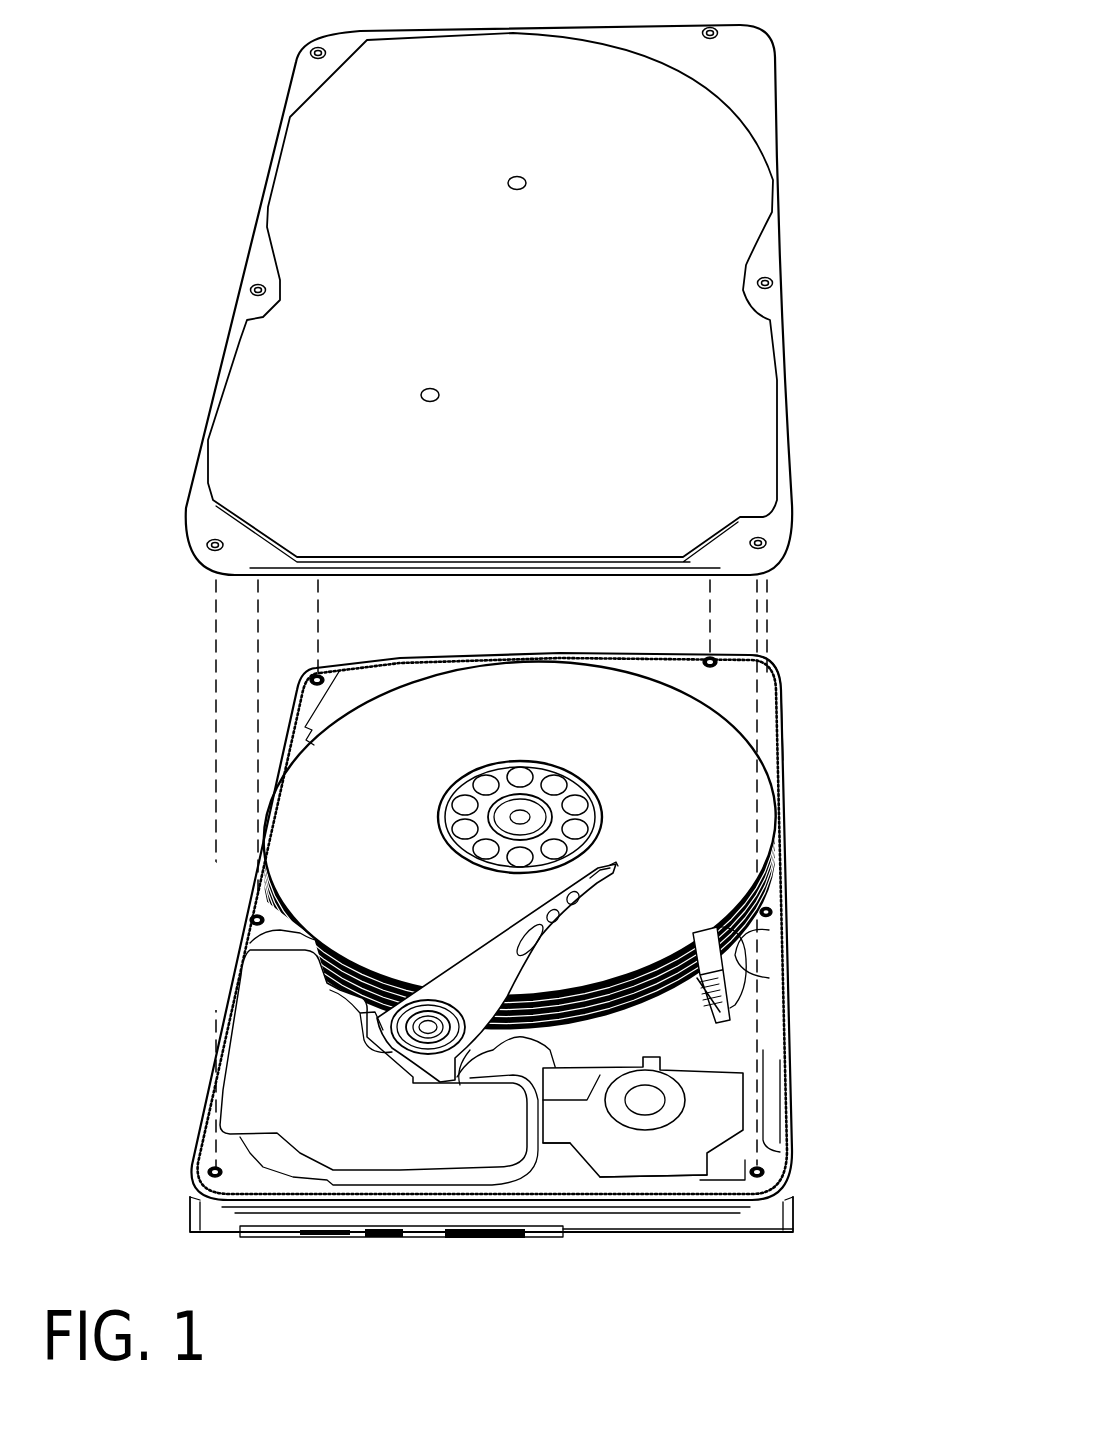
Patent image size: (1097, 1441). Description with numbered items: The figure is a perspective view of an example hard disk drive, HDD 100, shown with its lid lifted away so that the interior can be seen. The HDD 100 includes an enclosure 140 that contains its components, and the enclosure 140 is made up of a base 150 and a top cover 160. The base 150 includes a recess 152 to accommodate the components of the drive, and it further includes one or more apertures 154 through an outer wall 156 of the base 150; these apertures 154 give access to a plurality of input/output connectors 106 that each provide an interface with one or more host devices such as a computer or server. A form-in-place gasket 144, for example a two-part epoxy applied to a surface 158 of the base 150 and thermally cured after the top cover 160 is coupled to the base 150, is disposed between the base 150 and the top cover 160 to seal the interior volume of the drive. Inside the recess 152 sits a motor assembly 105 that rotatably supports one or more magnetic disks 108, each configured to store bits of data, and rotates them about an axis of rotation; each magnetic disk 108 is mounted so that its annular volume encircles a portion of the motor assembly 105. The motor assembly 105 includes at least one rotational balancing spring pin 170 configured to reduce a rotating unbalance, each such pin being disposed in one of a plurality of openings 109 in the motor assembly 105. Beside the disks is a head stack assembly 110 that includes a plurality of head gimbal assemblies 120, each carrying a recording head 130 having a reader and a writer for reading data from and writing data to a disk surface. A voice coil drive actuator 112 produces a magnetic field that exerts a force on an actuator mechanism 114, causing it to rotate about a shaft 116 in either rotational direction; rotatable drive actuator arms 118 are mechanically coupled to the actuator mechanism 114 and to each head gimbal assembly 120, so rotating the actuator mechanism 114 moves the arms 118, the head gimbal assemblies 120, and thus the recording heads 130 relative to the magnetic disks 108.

The hard disk drive 100 is at (170, 46).
The motor assembly 105 is at (443, 780).
The input/output connectors 106 is at (374, 1238).
The magnetic disk 108 is at (695, 826).
The openings 109 is at (496, 775).
The head stack assembly 110 is at (545, 1024).
The voice coil drive actuator 112 is at (491, 913).
The actuator mechanism 114 is at (380, 1030).
The shaft 116 is at (428, 1027).
The rotatable drive actuator arms 118 is at (490, 977).
The head gimbal assembly 120 is at (597, 883).
The recording head 130 is at (614, 867).
The enclosure 140 is at (805, 232).
The form-in-place gasket 144 is at (430, 659).
The base 150 is at (205, 1130).
The recess 152 is at (366, 686).
The apertures 154 is at (332, 1243).
The outer wall 156 is at (600, 1228).
The surface 158 is at (731, 684).
The top cover 160 is at (539, 321).
The rotational balancing spring pin 170 is at (556, 781).